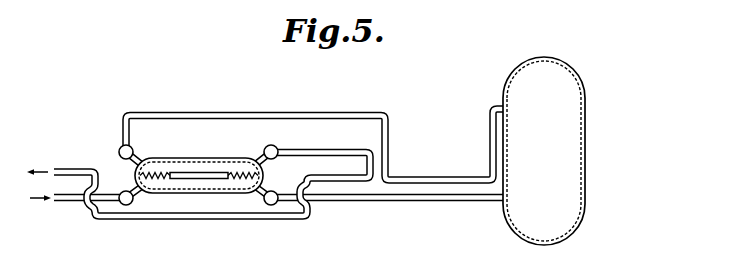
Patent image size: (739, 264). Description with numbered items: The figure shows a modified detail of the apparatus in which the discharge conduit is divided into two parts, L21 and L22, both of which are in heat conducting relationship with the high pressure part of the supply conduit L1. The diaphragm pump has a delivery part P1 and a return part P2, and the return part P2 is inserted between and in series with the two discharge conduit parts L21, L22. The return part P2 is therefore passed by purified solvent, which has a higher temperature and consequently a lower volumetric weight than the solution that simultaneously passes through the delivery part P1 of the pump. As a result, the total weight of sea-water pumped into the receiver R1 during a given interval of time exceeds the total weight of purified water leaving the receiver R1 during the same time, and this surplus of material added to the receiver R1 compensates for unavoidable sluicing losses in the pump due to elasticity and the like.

The delivery part of the pump P1 is at (205, 184).
The return part of the diaphragm pump P2 is at (199, 165).
The supply conduit L1 is at (434, 201).
The first part of the discharge conduit L21 is at (452, 178).
The second part of the discharge conduit L22 is at (345, 177).
The receiver R1 is at (577, 117).